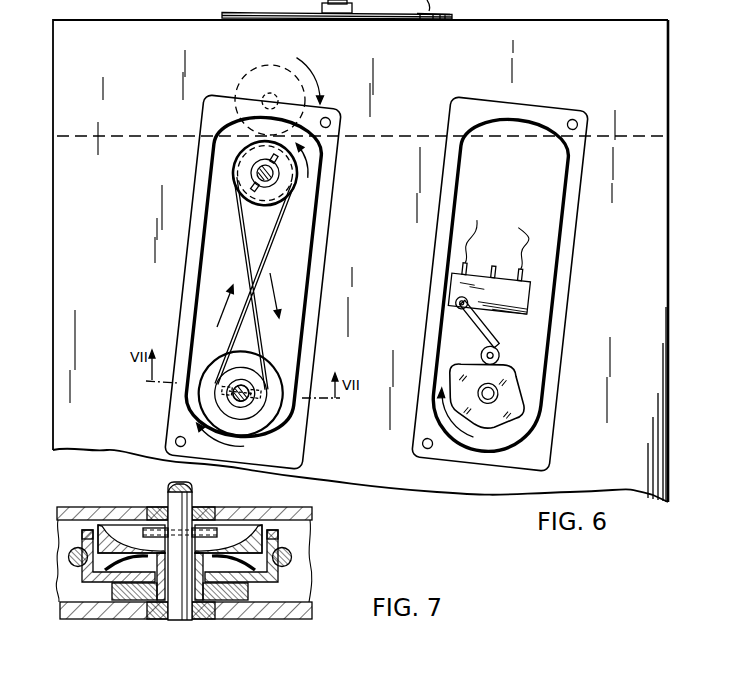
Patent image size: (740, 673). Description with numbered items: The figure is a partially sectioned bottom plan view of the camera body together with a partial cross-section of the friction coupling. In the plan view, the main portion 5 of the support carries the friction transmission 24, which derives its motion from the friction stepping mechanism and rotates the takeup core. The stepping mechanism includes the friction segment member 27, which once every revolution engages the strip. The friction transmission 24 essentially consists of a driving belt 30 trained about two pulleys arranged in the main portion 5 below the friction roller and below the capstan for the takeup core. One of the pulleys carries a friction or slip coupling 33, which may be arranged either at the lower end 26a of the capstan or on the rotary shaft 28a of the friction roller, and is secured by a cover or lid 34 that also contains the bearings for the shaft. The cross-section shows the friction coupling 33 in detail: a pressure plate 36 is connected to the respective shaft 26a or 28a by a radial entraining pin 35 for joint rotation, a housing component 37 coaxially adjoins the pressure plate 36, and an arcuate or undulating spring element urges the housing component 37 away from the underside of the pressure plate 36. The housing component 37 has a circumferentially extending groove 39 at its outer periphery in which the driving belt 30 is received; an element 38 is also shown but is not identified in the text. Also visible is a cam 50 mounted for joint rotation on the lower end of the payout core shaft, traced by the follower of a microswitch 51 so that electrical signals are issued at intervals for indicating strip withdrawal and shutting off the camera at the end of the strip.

In FIG. 6, the main portion of the support 5 is at (617, 38).
In FIG. 7, the main portion of the support 5 is at (67, 507).
In FIG. 6, the friction segment member 27 is at (247, 80).
In FIG. 6, the friction transmission 24 is at (276, 254).
In FIG. 6, the driving belt 30 is at (262, 326).
In FIG. 7, the driving belt 30 is at (292, 557).
In FIG. 6, the radial entraining pin 35 is at (257, 400).
In FIG. 7, the radial entraining pin 35 is at (204, 528).
In FIG. 6, the microswitch 51 is at (494, 293).
In FIG. 6, the cam 50 is at (509, 403).
In FIG. 7, the lower end of the capstan 26a is at (142, 551).
In FIG. 7, the rotary shaft of the friction roller 28a is at (168, 493).
In FIG. 7, the pressure plate 36 is at (247, 538).
In FIG. 7, the housing component 37 is at (278, 532).
In FIG. 7, the circumferentially extending groove 39 is at (273, 570).
In FIG. 7, the friction coupling 33 is at (93, 583).
In FIG. 7, the washer 38 is at (128, 565).
In FIG. 7, the cover 34 is at (308, 612).